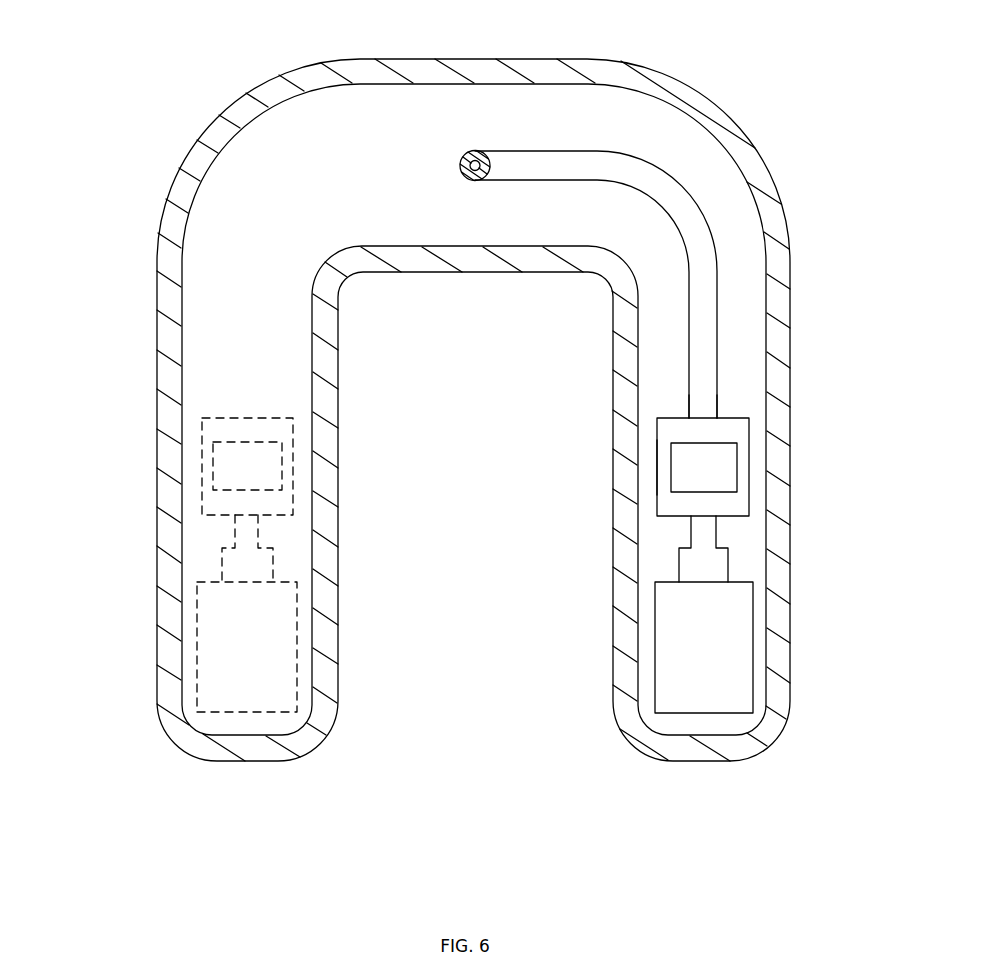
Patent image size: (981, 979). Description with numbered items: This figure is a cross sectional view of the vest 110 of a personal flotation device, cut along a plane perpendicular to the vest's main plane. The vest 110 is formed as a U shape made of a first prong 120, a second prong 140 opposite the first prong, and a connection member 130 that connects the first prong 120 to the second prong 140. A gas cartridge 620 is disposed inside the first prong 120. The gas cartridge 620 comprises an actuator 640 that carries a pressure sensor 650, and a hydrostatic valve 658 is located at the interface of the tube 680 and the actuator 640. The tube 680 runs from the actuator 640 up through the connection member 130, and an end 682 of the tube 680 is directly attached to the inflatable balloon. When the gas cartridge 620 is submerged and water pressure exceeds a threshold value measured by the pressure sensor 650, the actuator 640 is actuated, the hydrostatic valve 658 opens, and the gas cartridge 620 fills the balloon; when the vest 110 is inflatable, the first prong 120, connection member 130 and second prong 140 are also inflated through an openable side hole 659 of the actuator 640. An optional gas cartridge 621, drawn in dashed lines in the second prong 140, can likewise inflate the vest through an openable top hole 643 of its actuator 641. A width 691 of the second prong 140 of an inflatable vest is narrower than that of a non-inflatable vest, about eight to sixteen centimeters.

The vest 110 is at (186, 104).
The first prong 120 is at (601, 658).
The connection member 130 is at (418, 286).
The second prong 140 is at (347, 645).
The width 691 is at (423, 352).
The end 682 is at (481, 138).
The tube 680 is at (712, 302).
The hydrostatic valve 658 is at (726, 412).
The openable side hole 659 is at (650, 470).
The actuator 640 is at (735, 432).
The pressure sensor 650 is at (722, 478).
The gas cartridge 620 is at (713, 645).
The actuator 641 is at (215, 430).
The openable top hole 643 is at (232, 470).
The gas cartridge 621 is at (228, 658).